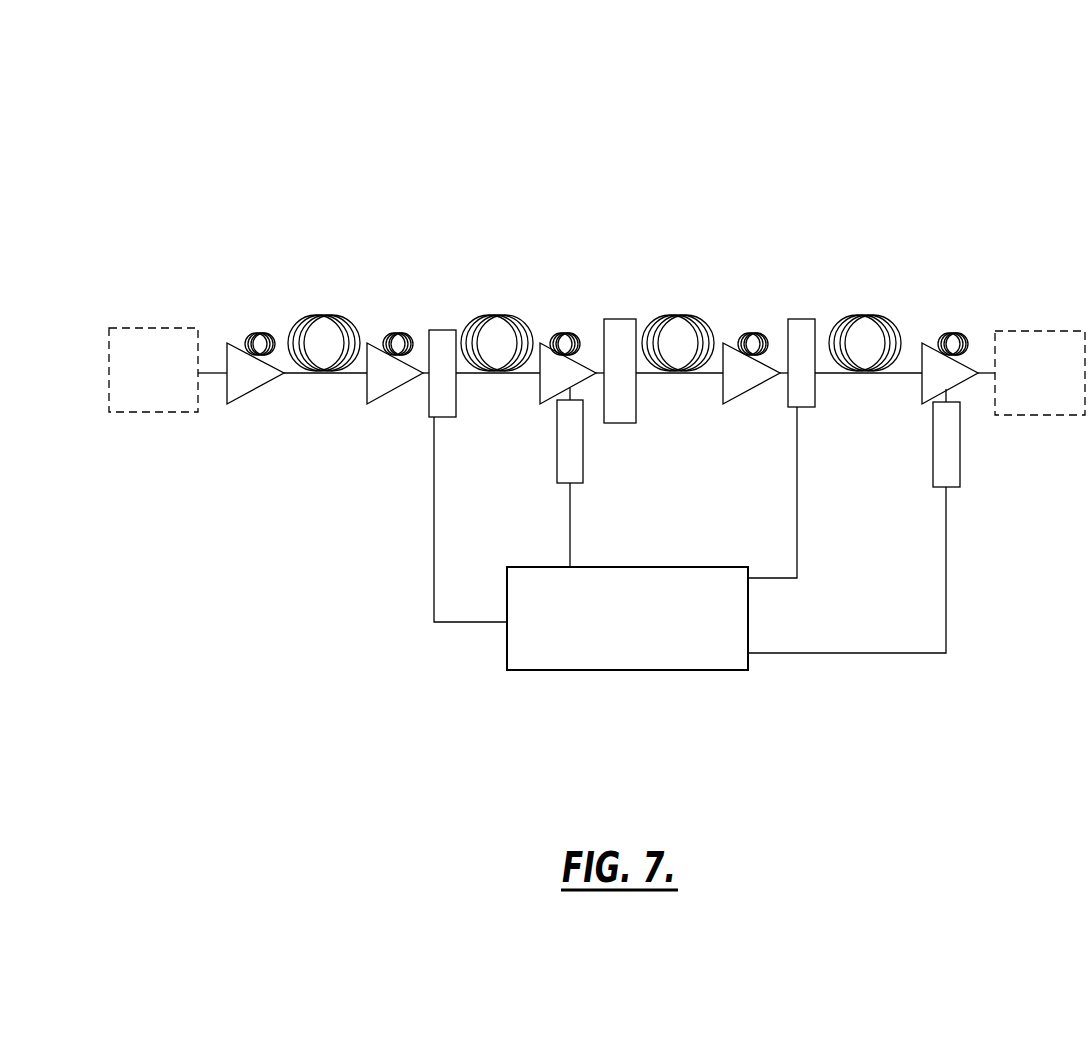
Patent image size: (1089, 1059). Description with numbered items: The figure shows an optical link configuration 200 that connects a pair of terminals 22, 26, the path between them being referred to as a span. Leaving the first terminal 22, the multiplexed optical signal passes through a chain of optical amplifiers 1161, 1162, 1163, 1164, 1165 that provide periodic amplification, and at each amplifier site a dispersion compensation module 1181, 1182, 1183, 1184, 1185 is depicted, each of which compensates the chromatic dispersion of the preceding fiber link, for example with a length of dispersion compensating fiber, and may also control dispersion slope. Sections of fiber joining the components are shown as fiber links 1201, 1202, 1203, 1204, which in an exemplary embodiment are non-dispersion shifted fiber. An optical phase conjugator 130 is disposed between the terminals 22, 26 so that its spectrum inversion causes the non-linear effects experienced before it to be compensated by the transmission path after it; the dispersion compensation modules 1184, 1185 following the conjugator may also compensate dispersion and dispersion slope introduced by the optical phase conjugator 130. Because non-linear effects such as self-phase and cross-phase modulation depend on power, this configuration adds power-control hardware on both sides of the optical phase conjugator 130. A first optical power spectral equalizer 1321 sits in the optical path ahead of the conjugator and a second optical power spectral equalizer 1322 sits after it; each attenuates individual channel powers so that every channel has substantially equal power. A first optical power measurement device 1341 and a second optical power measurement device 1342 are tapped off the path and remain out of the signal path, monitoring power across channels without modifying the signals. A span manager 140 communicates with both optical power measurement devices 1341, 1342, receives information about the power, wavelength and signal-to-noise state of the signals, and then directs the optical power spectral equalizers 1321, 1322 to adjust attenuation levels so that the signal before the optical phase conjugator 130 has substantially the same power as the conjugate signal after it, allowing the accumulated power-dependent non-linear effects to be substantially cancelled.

The optical link configuration 200 is at (748, 117).
The terminal 22 is at (143, 383).
The terminal 26 is at (1030, 383).
The amplifier 1161 is at (243, 396).
The amplifier 1162 is at (373, 403).
The amplifier 1163 is at (541, 403).
The amplifier 1164 is at (728, 405).
The amplifier 1165 is at (924, 403).
The dispersion compensation module 1181 is at (263, 332).
The dispersion compensation module 1182 is at (412, 333).
The dispersion compensation module 1183 is at (578, 340).
The dispersion compensation module 1184 is at (768, 337).
The dispersion compensation module 1185 is at (972, 333).
The fiber link 1201 is at (345, 313).
The fiber link 1202 is at (515, 313).
The fiber link 1203 is at (700, 313).
The fiber link 1204 is at (887, 313).
The optical phase conjugator 130 is at (620, 320).
The optical power spectral equalizer 1321 is at (447, 420).
The optical power spectral equalizer 1322 is at (802, 315).
The optical power measurement device 1341 is at (584, 455).
The optical power measurement device 1342 is at (962, 457).
The span manager 140 is at (505, 654).